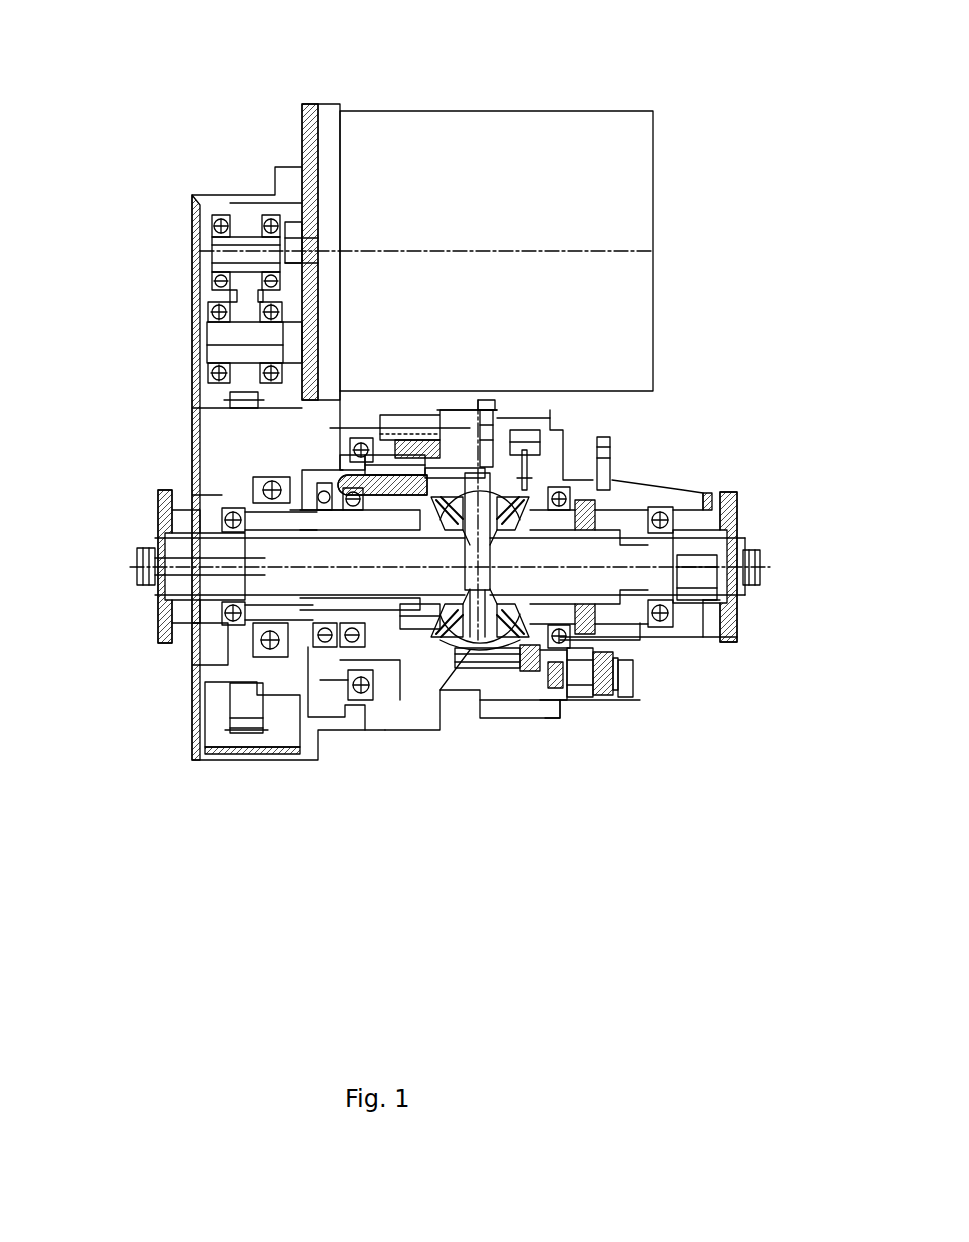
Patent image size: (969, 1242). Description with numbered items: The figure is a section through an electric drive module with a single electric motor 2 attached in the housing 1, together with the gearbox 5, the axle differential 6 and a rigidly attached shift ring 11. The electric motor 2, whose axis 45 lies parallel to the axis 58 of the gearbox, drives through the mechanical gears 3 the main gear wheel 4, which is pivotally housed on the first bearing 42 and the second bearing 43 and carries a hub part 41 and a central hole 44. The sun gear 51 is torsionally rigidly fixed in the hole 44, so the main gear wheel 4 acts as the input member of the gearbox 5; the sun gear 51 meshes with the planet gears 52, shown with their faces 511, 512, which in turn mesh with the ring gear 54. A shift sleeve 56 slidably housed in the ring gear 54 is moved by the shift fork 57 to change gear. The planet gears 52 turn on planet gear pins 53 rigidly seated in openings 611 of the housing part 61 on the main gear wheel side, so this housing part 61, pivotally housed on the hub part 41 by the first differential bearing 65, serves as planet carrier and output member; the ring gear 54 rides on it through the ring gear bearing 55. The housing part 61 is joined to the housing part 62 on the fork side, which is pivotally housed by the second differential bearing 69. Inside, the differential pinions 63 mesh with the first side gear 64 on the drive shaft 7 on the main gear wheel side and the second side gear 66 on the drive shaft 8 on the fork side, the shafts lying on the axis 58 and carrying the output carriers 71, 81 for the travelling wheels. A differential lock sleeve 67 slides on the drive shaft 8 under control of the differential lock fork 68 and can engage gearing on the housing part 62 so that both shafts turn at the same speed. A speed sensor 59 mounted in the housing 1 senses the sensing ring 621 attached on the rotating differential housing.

The housing 1 is at (683, 485).
The electric motor 2 is at (337, 197).
The mechanical gears 3 is at (245, 352).
The main gear wheel 4 is at (262, 445).
The gearbox 5 is at (428, 425).
The axle differential 6 is at (508, 673).
The drive shaft on the main gear wheel side 7 is at (228, 598).
The drive shaft on the fork side 8 is at (735, 518).
The shift ring 11 is at (626, 251).
The main gear wheel hub part 41 is at (320, 522).
The main gear wheel first bearing 42 is at (310, 500).
The main gear wheel second bearing 43 is at (290, 484).
The main gear wheel hole 44 is at (262, 592).
The axis of the electric motor 45 is at (455, 410).
The sun gear 51 is at (320, 597).
The planet gear 52 is at (430, 452).
The planet gear pin 53 is at (374, 445).
The ring gear 54 is at (400, 440).
The ring gear bearing 55 is at (349, 440).
The shift sleeve 56 is at (493, 458).
The shift fork 57 is at (493, 420).
The axis of the gearbox 58 is at (737, 638).
The speed sensor 59 is at (578, 692).
The housing part on the main gear wheel side 61 is at (515, 430).
The housing part on the fork side 62 is at (598, 645).
The differential pinion 63 is at (530, 477).
The first side gear 64 is at (435, 622).
The first differential bearing 65 is at (330, 455).
The second side gear 66 is at (470, 643).
The differential lock sleeve 67 is at (590, 520).
The differential lock fork 68 is at (610, 470).
The second differential bearing 69 is at (605, 668).
The output carrier 71 is at (160, 628).
The output carrier 81 is at (667, 582).
The planet gear face 511 is at (381, 455).
The planet gear face 512 is at (481, 403).
The housing openings 611 is at (491, 460).
The sensing ring 621 is at (535, 692).